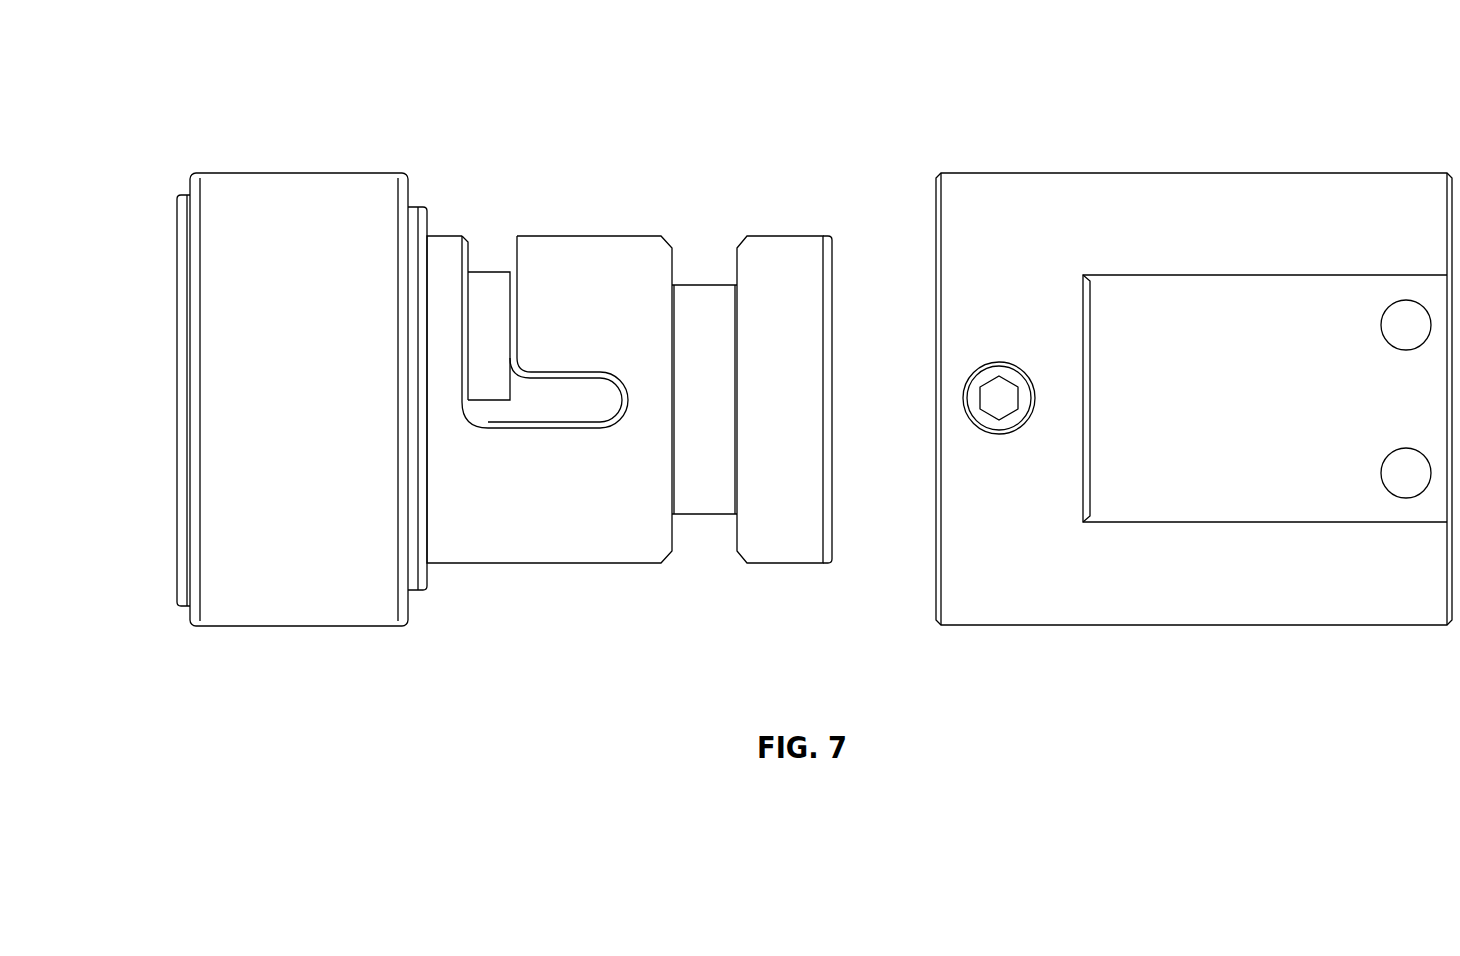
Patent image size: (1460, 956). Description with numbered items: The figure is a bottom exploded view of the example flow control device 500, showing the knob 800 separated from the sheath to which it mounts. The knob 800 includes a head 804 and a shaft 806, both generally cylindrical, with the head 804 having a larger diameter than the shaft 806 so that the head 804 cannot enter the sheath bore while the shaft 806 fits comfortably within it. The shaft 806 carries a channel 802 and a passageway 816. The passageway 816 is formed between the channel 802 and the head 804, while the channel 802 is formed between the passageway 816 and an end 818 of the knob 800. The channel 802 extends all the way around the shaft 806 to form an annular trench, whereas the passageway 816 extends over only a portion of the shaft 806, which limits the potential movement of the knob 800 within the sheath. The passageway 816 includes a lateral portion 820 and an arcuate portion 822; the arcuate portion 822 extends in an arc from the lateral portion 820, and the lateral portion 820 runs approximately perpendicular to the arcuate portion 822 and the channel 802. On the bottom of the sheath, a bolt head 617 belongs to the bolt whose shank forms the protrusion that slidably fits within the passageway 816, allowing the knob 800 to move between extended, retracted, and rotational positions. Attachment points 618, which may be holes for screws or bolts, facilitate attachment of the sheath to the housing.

The flow control device 500 is at (766, 378).
The knob 800 is at (456, 405).
The channel 802 is at (697, 247).
The head 804 is at (293, 600).
The shaft 806 is at (517, 550).
The passageway 816 is at (497, 237).
The end 818 is at (775, 547).
The lateral portion 820 is at (563, 440).
The arcuate portion 822 is at (520, 283).
The bolt head 617 is at (997, 403).
The attachment points 618 is at (1407, 298).